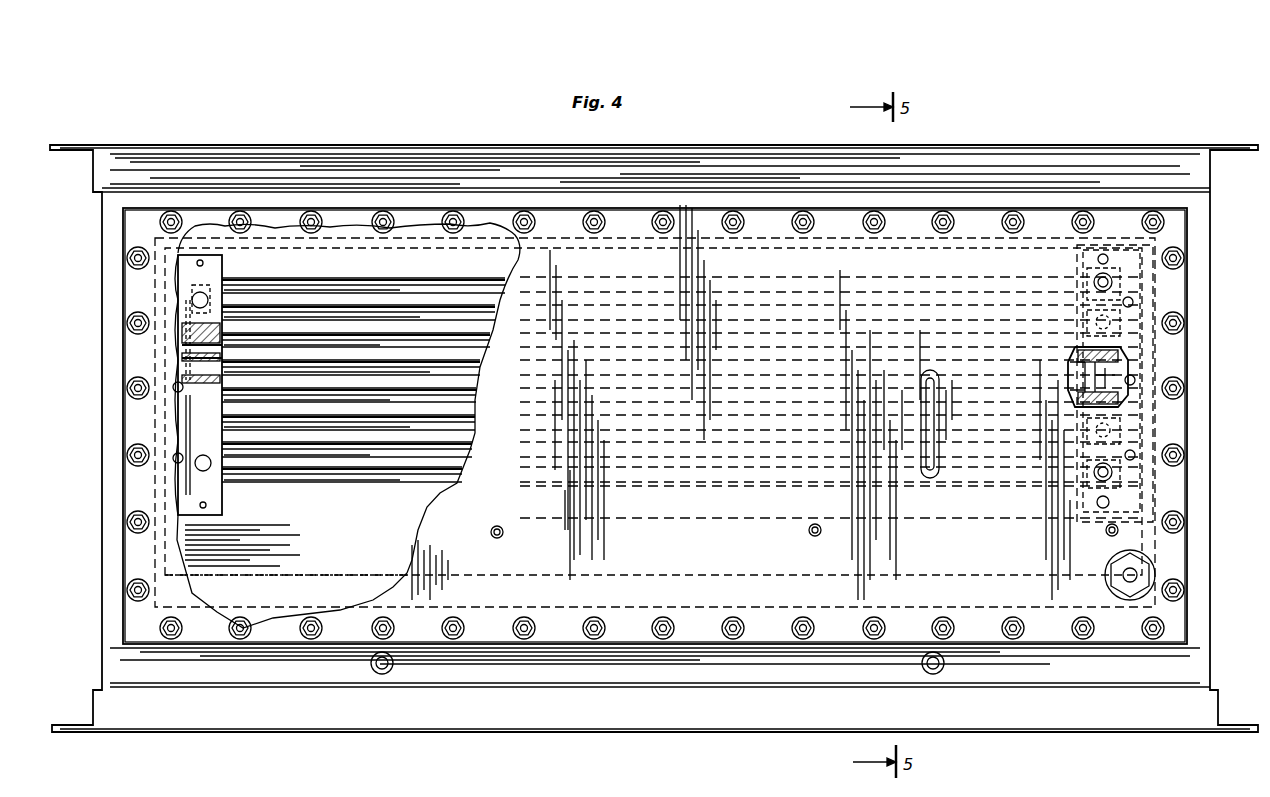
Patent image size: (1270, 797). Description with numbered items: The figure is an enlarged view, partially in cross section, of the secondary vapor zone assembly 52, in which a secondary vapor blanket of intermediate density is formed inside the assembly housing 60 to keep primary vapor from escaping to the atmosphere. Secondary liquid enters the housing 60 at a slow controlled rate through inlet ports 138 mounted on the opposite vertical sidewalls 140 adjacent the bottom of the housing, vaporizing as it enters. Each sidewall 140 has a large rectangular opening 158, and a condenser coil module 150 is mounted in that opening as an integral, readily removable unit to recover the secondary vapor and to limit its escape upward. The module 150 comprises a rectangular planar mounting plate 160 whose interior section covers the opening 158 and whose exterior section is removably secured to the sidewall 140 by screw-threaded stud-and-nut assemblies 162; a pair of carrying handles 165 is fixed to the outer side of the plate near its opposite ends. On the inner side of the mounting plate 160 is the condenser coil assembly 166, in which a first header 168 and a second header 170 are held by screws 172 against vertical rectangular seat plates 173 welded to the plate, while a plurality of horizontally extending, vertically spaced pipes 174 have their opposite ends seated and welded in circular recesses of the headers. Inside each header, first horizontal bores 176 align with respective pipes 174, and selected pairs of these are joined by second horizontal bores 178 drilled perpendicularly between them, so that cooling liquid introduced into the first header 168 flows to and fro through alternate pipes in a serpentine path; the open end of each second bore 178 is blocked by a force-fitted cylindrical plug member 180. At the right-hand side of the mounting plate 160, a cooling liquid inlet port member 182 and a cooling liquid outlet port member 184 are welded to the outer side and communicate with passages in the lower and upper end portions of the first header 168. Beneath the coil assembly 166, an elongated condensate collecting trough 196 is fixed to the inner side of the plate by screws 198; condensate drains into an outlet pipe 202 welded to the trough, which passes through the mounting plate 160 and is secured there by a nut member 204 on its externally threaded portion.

The secondary vapor zone assembly 52 is at (155, 130).
The assembly housing 60 is at (218, 137).
The inlet ports 138 is at (375, 672).
The vertical sidewalls 140 is at (1025, 193).
The condenser coil modules 150 is at (333, 203).
The rectangular opening 158 is at (422, 242).
The mounting plate 160 is at (495, 215).
The stud-and-nut assemblies 162 is at (668, 218).
The carrying handles 165 is at (933, 448).
The condenser coil assembly 166 is at (288, 268).
The first header 168 is at (1140, 282).
The second header 170 is at (185, 326).
The screws 172 is at (176, 386).
The seat plates 173 is at (195, 290).
The pipes 174 is at (392, 283).
The first horizontal bores 176 is at (182, 392).
The second horizontal bores 178 is at (185, 358).
The cylindrical plug member 180 is at (198, 297).
The cooling liquid inlet port member 182 is at (1108, 472).
The cooling liquid outlet port member 184 is at (1103, 282).
The condensate collecting trough 196 is at (195, 545).
The screws 198 is at (808, 532).
The outlet pipe 202 is at (1138, 575).
The nut member 204 is at (1140, 588).